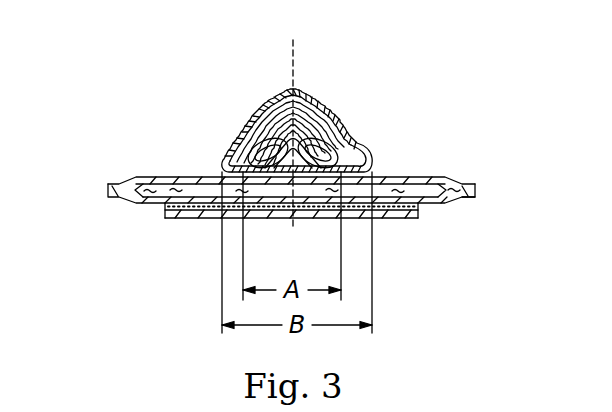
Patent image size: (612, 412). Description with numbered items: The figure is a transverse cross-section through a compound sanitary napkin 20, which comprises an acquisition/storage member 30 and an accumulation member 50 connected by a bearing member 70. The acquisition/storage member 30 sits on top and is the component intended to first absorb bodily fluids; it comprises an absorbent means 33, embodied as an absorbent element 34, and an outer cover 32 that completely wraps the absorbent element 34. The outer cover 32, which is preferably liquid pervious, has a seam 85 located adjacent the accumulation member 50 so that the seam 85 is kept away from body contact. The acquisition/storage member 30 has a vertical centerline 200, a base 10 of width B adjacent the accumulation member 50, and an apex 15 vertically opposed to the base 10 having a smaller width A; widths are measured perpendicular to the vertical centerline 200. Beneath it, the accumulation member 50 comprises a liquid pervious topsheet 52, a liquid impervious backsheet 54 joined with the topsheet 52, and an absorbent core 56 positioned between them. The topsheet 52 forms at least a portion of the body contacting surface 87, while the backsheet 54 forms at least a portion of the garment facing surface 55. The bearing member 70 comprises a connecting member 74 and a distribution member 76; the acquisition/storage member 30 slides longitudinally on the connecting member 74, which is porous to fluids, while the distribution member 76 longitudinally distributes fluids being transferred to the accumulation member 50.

The base 10 is at (270, 219).
The apex 15 is at (306, 90).
The compound sanitary napkin 20 is at (135, 108).
The acquisition/storage member 30 is at (236, 101).
The outer cover 32 is at (320, 92).
The absorbent means 33 is at (243, 120).
The absorbent element 34 is at (272, 94).
The accumulation member 50 is at (113, 174).
The topsheet 52 is at (153, 176).
The backsheet 54 is at (143, 203).
The garment facing surface 55 is at (427, 208).
The absorbent core 56 is at (437, 203).
The bearing member 70 is at (317, 137).
The connecting member 74 is at (371, 218).
The distribution member 76 is at (225, 142).
The seam 85 is at (368, 155).
The body facing surface 87 is at (431, 178).
The vertical centerline 200 is at (293, 46).